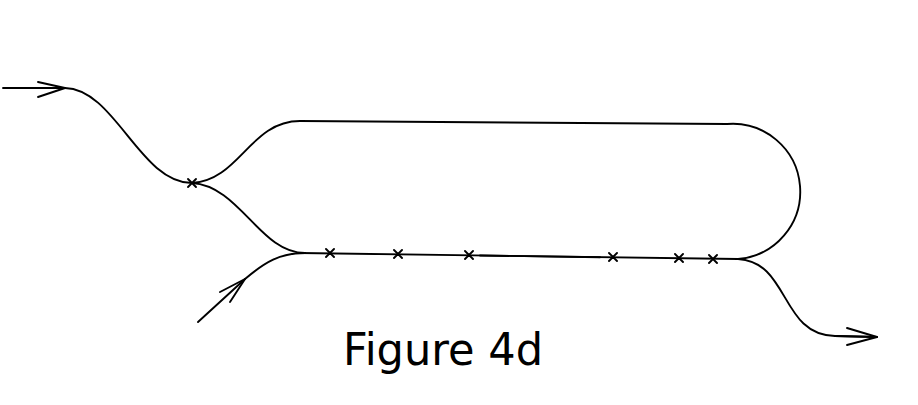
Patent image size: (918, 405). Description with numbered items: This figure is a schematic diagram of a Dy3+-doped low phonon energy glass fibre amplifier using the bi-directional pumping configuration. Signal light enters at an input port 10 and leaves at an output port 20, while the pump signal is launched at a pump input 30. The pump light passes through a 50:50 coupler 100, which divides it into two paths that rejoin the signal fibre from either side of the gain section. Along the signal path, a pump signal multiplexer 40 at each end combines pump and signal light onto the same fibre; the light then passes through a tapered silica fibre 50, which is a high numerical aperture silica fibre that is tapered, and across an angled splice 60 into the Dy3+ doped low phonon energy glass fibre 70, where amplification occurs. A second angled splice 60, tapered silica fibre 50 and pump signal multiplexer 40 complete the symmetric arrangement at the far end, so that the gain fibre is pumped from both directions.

The input port 10 is at (215, 308).
The output port 20 is at (788, 295).
The pump input 30 is at (15, 84).
The pump signal multiplexer 40 is at (523, 240).
The tapered silica fibre 50 is at (538, 239).
The angled splice 60 is at (541, 240).
The Dy3+ doped low phonon energy glass fibre 70 is at (532, 255).
The 50:50 coupler 100 is at (193, 168).